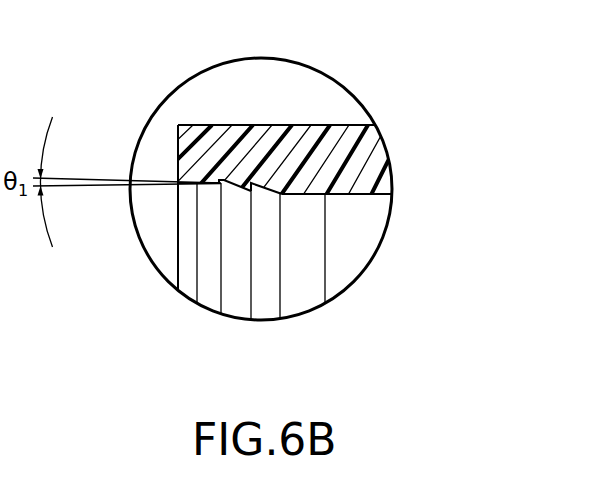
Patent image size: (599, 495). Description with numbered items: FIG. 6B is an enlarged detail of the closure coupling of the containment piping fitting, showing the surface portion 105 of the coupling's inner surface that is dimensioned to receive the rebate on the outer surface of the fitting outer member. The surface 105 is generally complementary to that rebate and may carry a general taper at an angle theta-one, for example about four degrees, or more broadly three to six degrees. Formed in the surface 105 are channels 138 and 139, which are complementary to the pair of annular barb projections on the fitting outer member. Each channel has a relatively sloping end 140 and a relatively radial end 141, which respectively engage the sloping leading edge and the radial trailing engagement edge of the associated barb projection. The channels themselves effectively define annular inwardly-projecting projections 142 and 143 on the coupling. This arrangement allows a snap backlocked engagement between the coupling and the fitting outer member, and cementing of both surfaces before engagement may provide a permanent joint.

The surface portion of closure coupling inner surface 105 is at (232, 252).
The channel 138 is at (226, 187).
The channel 139 is at (265, 195).
The sloping end of channel 140 is at (233, 222).
The radial end of channel 141 is at (250, 283).
The annular inwardly-projecting projection 142 is at (250, 182).
The annular inwardly-projecting projection 143 is at (221, 181).